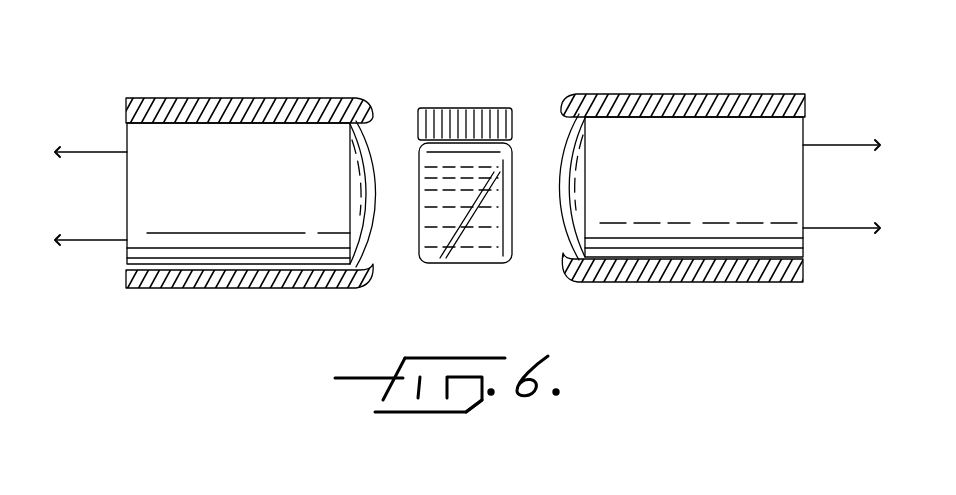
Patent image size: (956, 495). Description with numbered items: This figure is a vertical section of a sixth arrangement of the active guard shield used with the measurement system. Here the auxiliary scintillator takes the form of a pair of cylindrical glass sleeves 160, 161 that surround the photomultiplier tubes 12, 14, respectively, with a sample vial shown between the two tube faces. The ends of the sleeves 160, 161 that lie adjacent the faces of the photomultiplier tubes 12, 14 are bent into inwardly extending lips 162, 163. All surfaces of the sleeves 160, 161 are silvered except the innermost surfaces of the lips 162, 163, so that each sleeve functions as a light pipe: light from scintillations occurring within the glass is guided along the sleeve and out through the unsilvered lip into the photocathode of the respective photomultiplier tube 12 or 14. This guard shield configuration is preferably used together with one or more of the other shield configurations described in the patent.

The photomultiplier tube 12 is at (213, 140).
The photomultiplier tube 14 is at (723, 130).
The cylindrical glass sleeve 160 is at (260, 285).
The cylindrical glass sleeve 161 is at (686, 278).
The inwardly extending lip 162 is at (378, 116).
The inwardly extending lip 163 is at (562, 117).